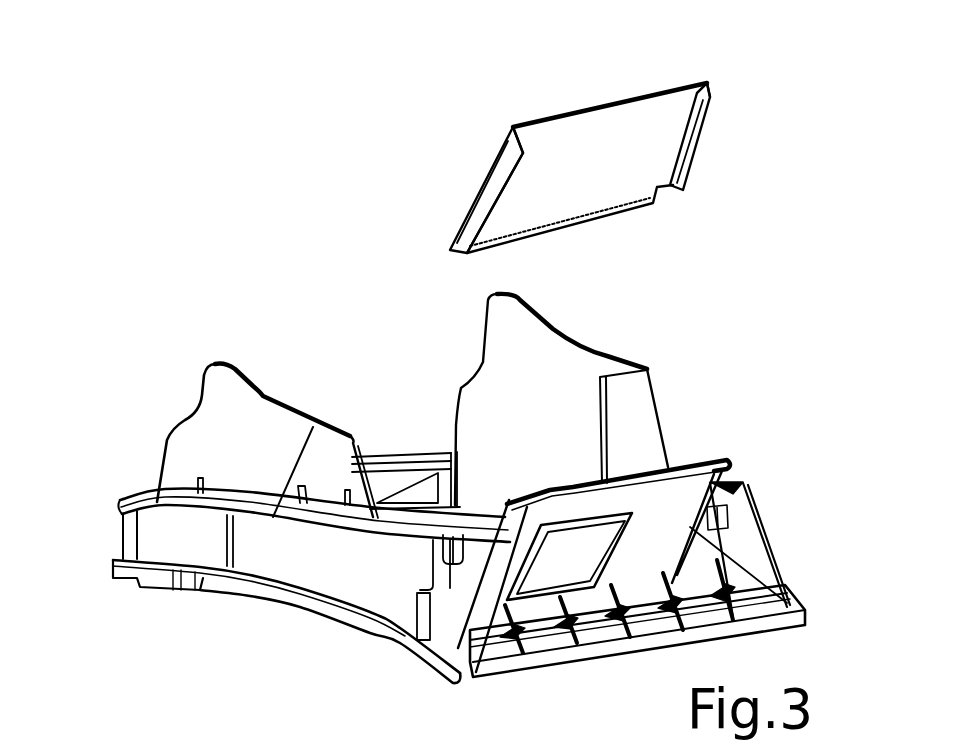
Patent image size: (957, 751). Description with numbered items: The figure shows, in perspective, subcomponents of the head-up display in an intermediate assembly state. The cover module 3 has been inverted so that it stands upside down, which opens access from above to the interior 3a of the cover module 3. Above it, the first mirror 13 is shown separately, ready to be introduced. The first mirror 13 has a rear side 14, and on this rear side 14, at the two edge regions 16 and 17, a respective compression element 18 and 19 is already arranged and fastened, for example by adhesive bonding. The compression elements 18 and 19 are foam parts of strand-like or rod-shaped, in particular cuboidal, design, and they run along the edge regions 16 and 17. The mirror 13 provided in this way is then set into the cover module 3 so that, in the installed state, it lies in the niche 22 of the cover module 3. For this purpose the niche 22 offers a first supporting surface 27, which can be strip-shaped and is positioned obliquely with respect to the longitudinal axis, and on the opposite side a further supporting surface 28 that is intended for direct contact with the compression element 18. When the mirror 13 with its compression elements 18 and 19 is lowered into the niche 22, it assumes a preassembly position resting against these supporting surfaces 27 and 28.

The cover module 3 is at (459, 486).
The interior of the cover module 3a is at (367, 413).
The first mirror 13 is at (608, 135).
The rear side 14 is at (630, 140).
The edge region 16 is at (710, 83).
The edge region 17 is at (535, 137).
The compression element 18 is at (700, 143).
The compression element 19 is at (493, 190).
The niche 22 is at (653, 467).
The first supporting surface 27 is at (520, 500).
The further supporting surface 28 is at (692, 460).